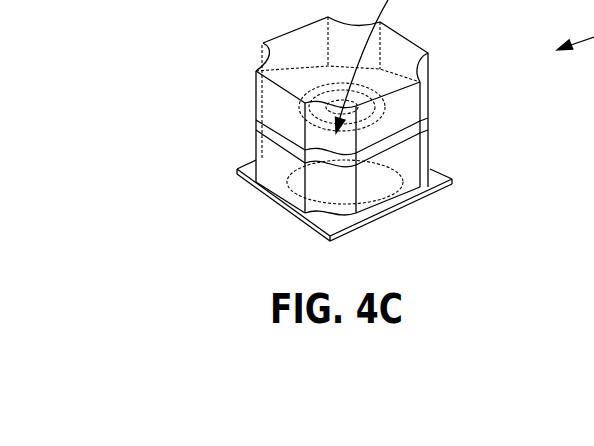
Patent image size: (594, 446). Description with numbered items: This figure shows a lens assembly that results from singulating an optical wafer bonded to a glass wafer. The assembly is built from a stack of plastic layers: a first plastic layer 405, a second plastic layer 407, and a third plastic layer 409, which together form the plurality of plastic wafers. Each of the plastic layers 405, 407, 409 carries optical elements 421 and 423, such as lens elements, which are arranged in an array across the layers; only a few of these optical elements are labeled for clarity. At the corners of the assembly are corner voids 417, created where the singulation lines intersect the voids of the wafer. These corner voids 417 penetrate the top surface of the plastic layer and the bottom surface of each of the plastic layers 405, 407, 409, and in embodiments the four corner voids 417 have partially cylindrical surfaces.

The first plastic layer 405 is at (249, 148).
The second plastic layer 407 is at (247, 122).
The third plastic layer 409 is at (254, 88).
The corner voids 417 is at (226, 48).
The optical elements 421 is at (385, 102).
The optical elements 423 is at (416, 160).